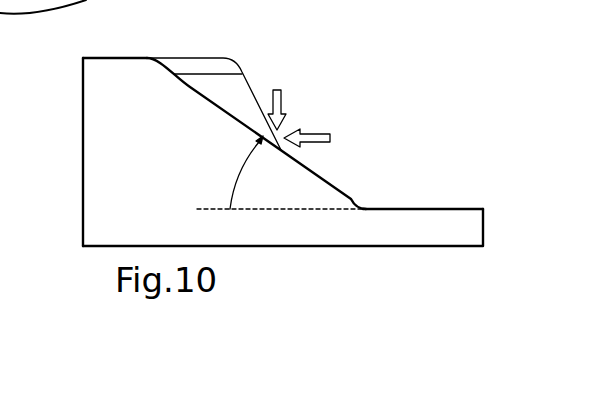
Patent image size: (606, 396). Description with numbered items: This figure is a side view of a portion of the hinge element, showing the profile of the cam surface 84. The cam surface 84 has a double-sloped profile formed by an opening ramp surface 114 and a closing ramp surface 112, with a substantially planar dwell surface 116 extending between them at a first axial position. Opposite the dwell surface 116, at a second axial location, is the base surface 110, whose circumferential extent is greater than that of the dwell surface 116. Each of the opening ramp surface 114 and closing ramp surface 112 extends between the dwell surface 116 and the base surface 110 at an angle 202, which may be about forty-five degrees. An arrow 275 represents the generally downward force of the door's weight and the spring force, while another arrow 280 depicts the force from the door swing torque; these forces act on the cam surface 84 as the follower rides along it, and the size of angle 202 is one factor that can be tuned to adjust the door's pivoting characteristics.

The cam surface 84 is at (470, 209).
The base surface 110 is at (439, 204).
The closing ramp surface 112 is at (321, 171).
The opening ramp surface 114 is at (249, 73).
The dwell surface 116 is at (147, 55).
The angle 202 is at (280, 172).
The arrow 275 is at (280, 100).
The arrow 280 is at (324, 136).